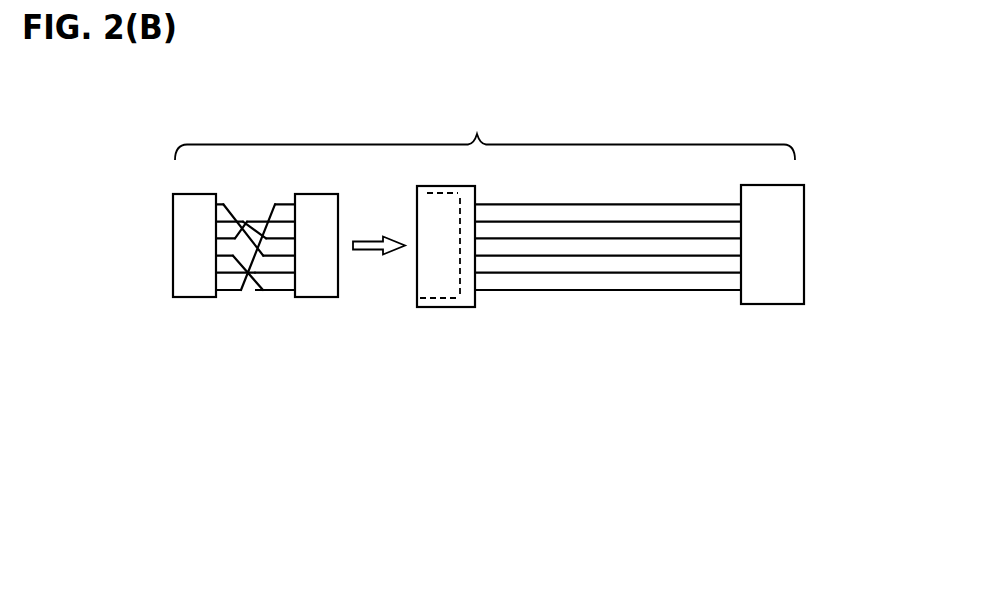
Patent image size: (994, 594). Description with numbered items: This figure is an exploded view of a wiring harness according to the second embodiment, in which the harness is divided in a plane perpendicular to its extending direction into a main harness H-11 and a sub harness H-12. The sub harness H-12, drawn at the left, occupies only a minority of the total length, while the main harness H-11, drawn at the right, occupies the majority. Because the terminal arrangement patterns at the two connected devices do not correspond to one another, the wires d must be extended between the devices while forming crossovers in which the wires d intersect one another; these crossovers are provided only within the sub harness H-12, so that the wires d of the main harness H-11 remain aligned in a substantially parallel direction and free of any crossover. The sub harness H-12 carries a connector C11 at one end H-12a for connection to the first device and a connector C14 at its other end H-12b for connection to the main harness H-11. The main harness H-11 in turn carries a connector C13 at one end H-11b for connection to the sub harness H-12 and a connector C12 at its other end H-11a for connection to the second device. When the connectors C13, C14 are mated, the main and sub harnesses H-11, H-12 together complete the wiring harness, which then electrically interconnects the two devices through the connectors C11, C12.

The connector C11 is at (185, 251).
The connector C12 is at (772, 240).
The connector C13 is at (432, 307).
The connector C14 is at (325, 277).
The main harness H-11 is at (630, 345).
The one end of main harness H-11a is at (722, 291).
The other end of main harness H-11b is at (478, 293).
The sub harness H-12 is at (185, 363).
The one end of sub harness H-12a is at (220, 303).
The other end of sub harness H-12b is at (280, 295).
The wires d is at (566, 292).